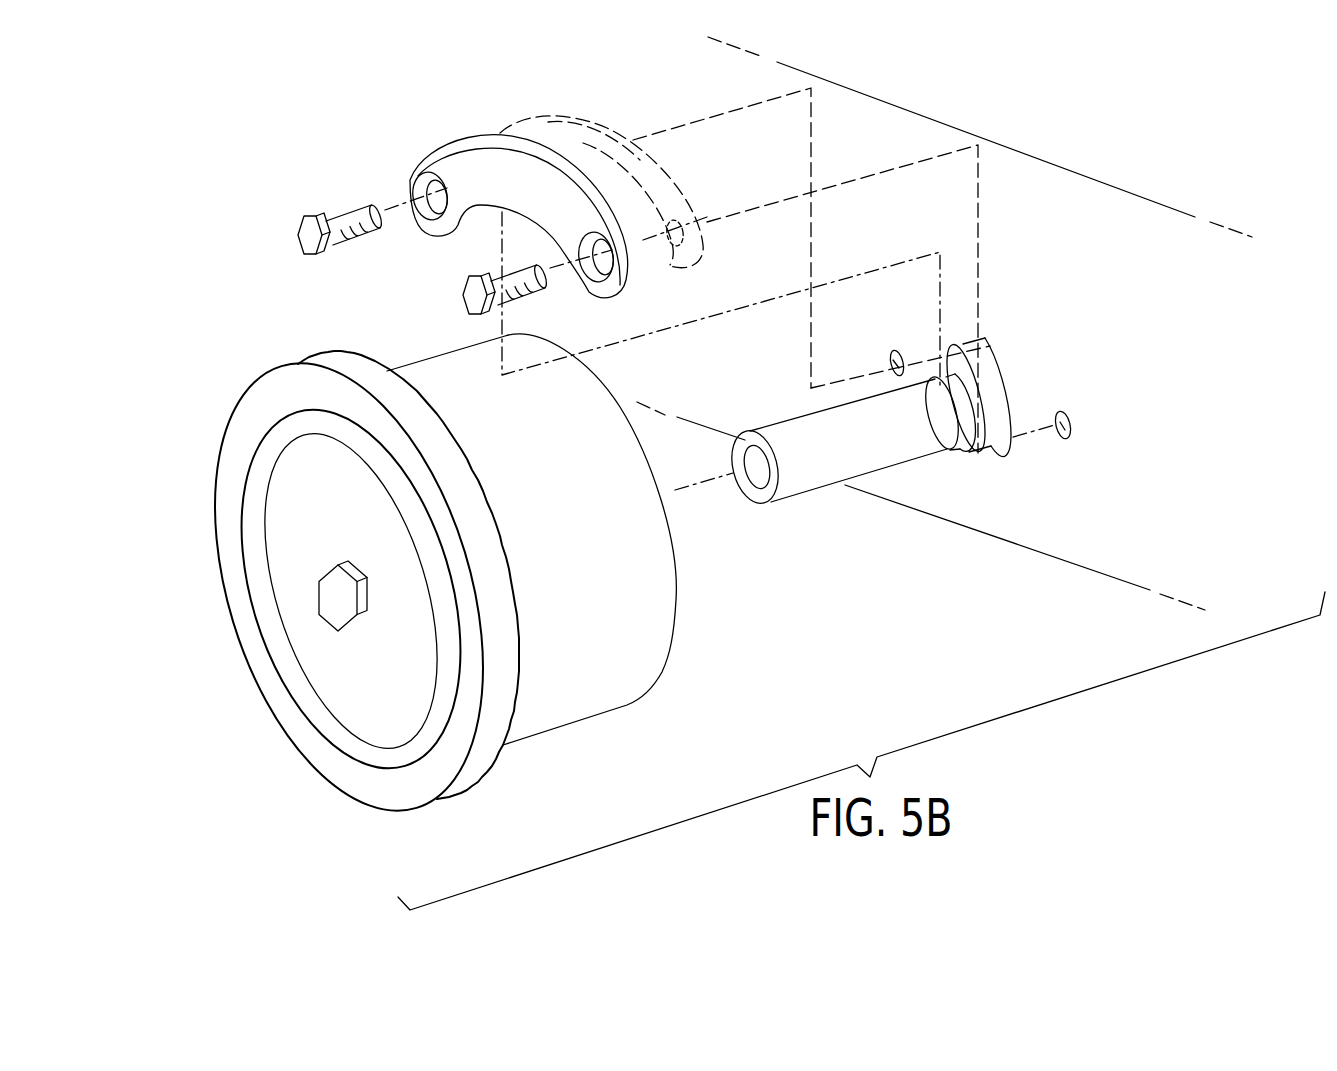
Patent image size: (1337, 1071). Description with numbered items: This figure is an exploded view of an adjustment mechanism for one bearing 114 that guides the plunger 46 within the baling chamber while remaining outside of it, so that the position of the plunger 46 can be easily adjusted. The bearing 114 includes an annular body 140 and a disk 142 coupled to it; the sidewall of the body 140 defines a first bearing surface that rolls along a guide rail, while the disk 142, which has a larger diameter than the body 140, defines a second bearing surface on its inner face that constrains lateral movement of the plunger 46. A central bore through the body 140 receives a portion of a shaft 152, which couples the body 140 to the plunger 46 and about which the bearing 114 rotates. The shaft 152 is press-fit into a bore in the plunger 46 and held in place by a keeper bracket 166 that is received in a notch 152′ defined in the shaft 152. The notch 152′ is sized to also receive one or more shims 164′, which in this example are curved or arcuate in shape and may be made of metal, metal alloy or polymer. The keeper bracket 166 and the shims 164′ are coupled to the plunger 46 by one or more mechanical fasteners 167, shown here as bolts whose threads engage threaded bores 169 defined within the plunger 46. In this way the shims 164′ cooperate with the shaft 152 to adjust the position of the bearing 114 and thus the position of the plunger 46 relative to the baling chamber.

The plunger 46 is at (1058, 268).
The bearing 114 is at (505, 791).
The body 140 is at (433, 368).
The disk 142 is at (215, 487).
The shaft 152 is at (807, 480).
The notch 152′ is at (960, 443).
The shim 164′ is at (573, 127).
The keeper bracket 166 is at (437, 162).
The mechanical fastener 167 is at (300, 235).
The threaded bore 169 is at (903, 350).